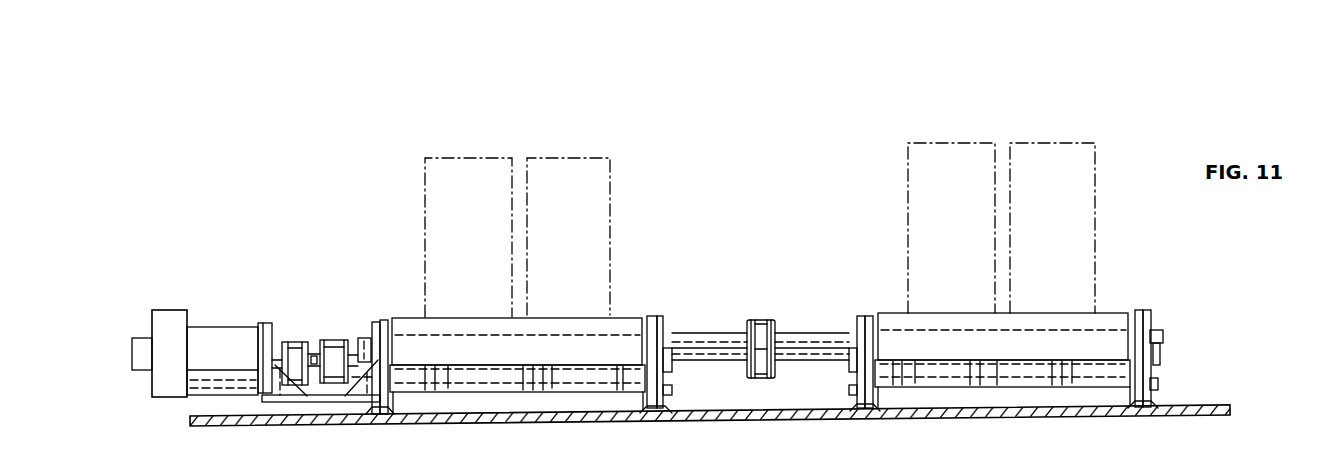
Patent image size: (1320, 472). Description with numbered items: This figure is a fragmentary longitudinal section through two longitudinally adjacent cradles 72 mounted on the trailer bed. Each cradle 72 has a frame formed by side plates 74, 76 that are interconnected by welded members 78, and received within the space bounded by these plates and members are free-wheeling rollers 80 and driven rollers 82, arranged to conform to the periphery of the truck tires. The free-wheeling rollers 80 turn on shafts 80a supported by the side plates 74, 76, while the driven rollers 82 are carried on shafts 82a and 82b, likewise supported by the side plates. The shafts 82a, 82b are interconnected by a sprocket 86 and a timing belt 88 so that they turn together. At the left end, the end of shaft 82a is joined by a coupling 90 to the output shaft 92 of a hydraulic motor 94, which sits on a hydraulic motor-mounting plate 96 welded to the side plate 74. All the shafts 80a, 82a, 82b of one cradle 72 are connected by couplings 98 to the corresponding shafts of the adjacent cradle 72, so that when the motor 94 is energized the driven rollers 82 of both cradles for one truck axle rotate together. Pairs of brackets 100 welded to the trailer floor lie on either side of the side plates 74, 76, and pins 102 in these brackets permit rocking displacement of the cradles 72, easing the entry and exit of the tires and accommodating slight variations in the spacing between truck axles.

The cradle 72 is at (676, 308).
The side plate 74 is at (385, 318).
The side plate 76 is at (654, 316).
The welded members 78 is at (497, 392).
The free-wheeling rollers 80 is at (548, 318).
The shaft 80a is at (787, 320).
The rollers 82 is at (451, 333).
The shaft 82a is at (312, 354).
The shaft 82b is at (350, 353).
The sprocket 86 is at (350, 403).
The timing belt 88 is at (334, 381).
The coupling 90 is at (294, 374).
The output shaft 92 is at (279, 354).
The hydraulic motor 94 is at (168, 325).
The hydraulic motor-mounting plate 96 is at (320, 403).
The couplings 98 is at (758, 350).
The brackets 100 is at (670, 412).
The pins 102 is at (850, 390).